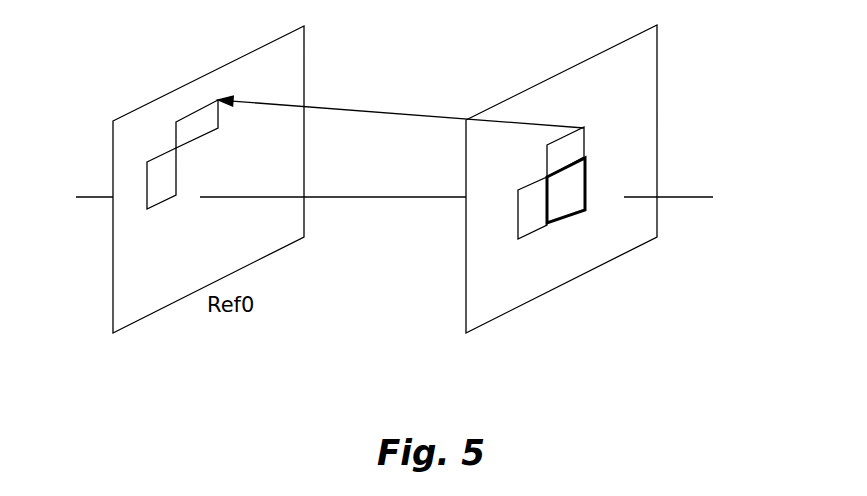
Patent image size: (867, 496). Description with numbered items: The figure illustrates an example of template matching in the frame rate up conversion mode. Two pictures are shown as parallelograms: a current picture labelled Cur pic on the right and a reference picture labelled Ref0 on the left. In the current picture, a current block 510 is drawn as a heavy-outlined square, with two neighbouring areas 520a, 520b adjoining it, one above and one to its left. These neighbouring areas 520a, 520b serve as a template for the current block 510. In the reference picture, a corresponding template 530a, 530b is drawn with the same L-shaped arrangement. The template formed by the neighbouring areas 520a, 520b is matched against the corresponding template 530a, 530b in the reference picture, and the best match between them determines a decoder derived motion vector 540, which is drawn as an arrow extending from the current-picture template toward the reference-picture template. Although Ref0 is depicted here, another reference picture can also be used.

The current block 510 is at (585, 188).
The neighbouring area 520a is at (558, 138).
The neighbouring area 520b is at (518, 212).
The corresponding template 530a is at (196, 111).
The corresponding template 530b is at (147, 180).
The decoder derived motion vector 540 is at (427, 117).